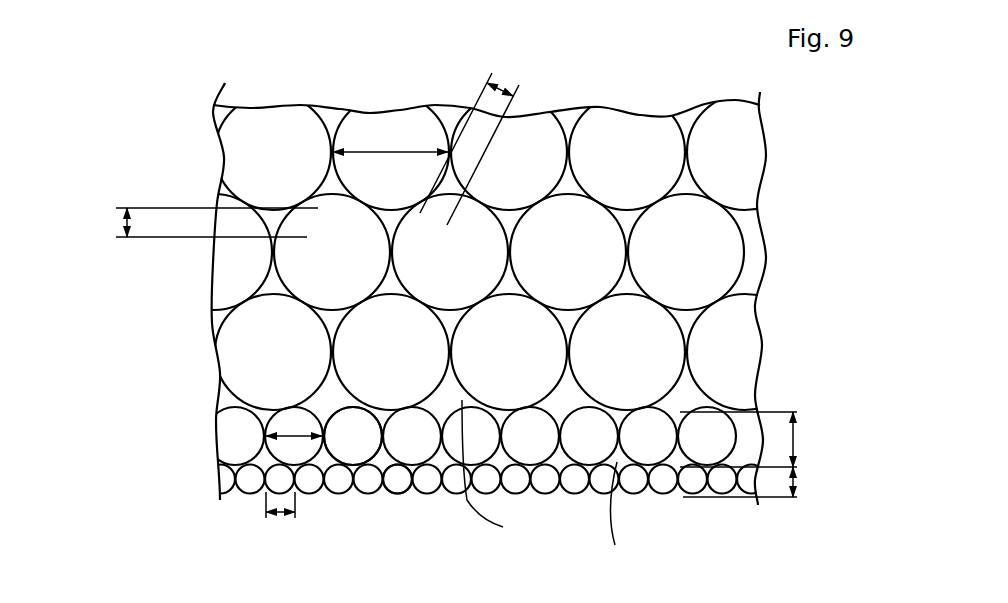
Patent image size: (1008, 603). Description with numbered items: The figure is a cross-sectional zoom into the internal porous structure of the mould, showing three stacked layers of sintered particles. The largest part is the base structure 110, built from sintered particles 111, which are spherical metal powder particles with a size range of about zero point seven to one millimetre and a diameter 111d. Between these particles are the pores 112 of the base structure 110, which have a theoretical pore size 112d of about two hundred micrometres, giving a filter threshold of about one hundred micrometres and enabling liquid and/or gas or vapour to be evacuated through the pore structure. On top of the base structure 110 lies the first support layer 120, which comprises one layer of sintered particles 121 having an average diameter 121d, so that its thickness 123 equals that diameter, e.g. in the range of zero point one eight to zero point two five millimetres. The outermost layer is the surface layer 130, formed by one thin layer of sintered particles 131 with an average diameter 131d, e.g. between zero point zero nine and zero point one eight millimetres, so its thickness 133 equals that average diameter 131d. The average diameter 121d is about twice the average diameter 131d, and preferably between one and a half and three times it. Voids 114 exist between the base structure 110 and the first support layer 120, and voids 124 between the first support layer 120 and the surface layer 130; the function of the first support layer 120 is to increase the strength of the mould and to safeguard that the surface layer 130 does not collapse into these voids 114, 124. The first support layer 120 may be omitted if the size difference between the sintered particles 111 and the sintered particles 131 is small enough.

The base structure 110 is at (802, 213).
The sintered particles of the base structure 111 is at (270, 138).
The diameter of the base structure particles 111d is at (387, 143).
The pores of the base structure 112 is at (268, 224).
The theoretical pore size 112d is at (503, 83).
The voids 114 is at (502, 472).
The first support layer 120 is at (206, 440).
The sintered particles of the first support layer 121 is at (357, 443).
The average diameter of the first support layer particles 121d is at (295, 430).
The thickness of the first support layer 123 is at (793, 435).
The voids 124 is at (598, 517).
The surface layer 130 is at (206, 482).
The sintered particles of the surface layer 131 is at (396, 470).
The average diameter of the surface layer particles 131d is at (280, 518).
The thickness of the surface layer 133 is at (793, 485).